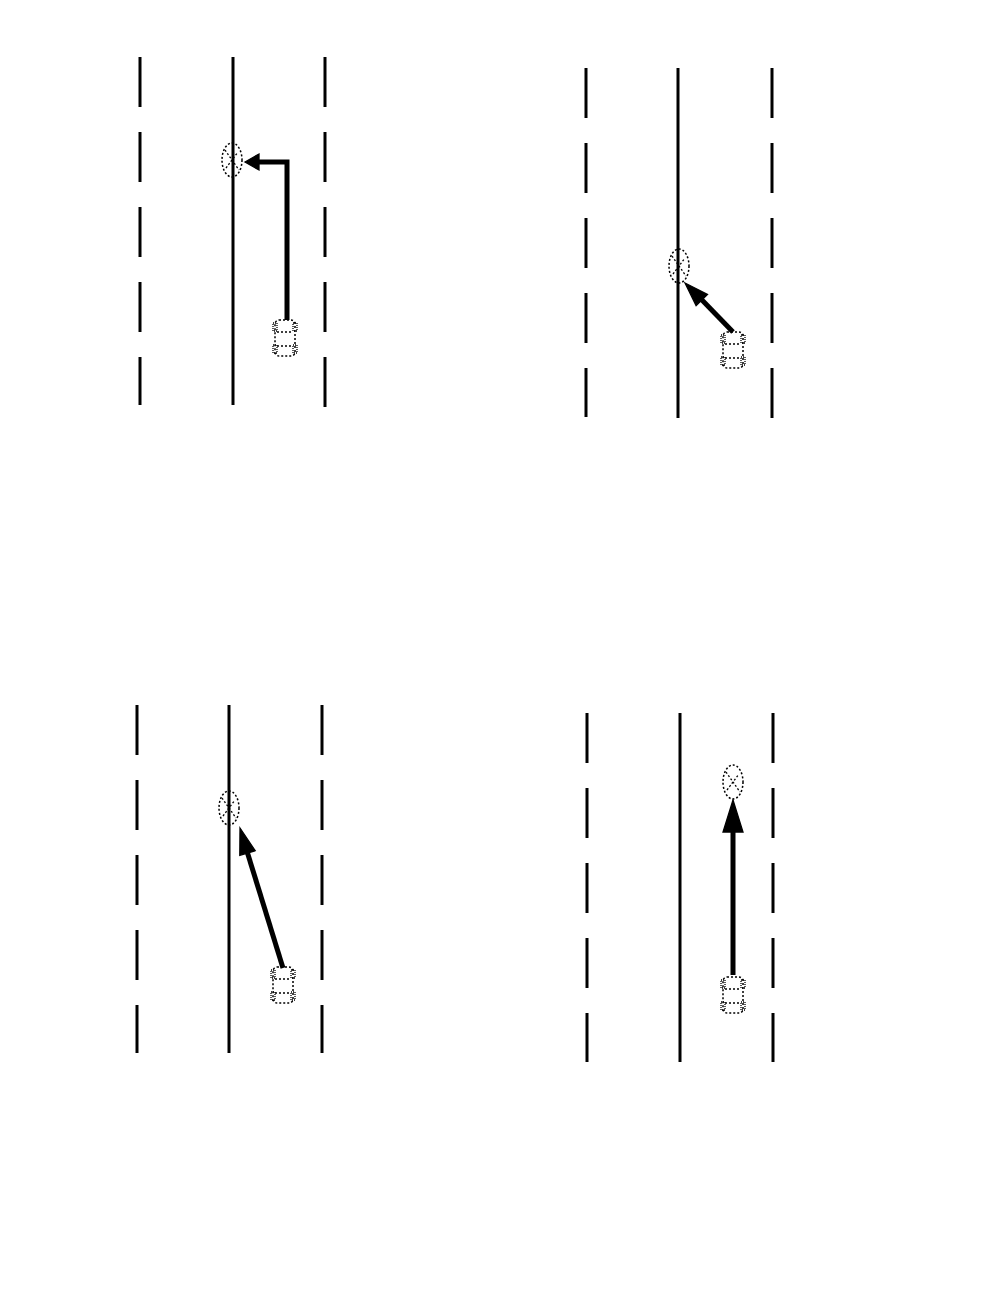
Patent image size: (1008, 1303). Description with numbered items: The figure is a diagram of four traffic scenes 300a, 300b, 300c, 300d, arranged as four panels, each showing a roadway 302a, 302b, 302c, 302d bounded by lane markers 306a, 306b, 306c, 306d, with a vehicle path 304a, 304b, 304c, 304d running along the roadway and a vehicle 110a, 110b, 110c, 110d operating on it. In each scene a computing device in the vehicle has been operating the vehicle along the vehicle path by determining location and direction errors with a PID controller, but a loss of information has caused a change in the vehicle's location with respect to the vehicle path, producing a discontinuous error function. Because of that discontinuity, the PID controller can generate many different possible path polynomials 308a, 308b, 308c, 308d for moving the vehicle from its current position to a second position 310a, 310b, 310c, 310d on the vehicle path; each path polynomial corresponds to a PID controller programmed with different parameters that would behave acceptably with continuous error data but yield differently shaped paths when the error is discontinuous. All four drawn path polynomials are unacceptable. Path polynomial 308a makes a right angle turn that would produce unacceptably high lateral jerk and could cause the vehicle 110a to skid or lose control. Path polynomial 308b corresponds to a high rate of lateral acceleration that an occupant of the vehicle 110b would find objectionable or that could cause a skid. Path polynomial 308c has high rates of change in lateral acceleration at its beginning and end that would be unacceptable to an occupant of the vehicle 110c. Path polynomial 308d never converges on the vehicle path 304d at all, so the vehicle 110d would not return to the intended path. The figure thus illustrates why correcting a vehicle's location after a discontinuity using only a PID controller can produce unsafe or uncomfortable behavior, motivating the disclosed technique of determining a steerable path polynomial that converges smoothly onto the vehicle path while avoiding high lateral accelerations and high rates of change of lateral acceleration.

The traffic scene 300a is at (263, 27).
The traffic scene 300b is at (700, 29).
The traffic scene 300c is at (255, 671).
The traffic scene 300d is at (705, 677).
The roadway 302a is at (187, 385).
The roadway 302b is at (638, 383).
The roadway 302c is at (188, 1013).
The roadway 302d is at (642, 1035).
The vehicle path 304a is at (235, 387).
The vehicle path 304b is at (680, 400).
The vehicle path 304c is at (232, 1033).
The vehicle path 304d is at (682, 1053).
The lane marker 306a is at (95, 268).
The lane marker 306b is at (562, 262).
The lane marker 306c is at (103, 905).
The lane marker 306d is at (542, 902).
The path polynomial 308a is at (287, 190).
The path polynomial 308b is at (713, 312).
The path polynomial 308c is at (265, 905).
The path polynomial 308d is at (733, 918).
The second position 310a is at (225, 160).
The second position 310b is at (670, 268).
The second position 310c is at (220, 808).
The second position 310d is at (743, 780).
The vehicle 110a is at (297, 338).
The vehicle 110b is at (743, 348).
The vehicle 110c is at (293, 985).
The vehicle 110d is at (786, 1029).